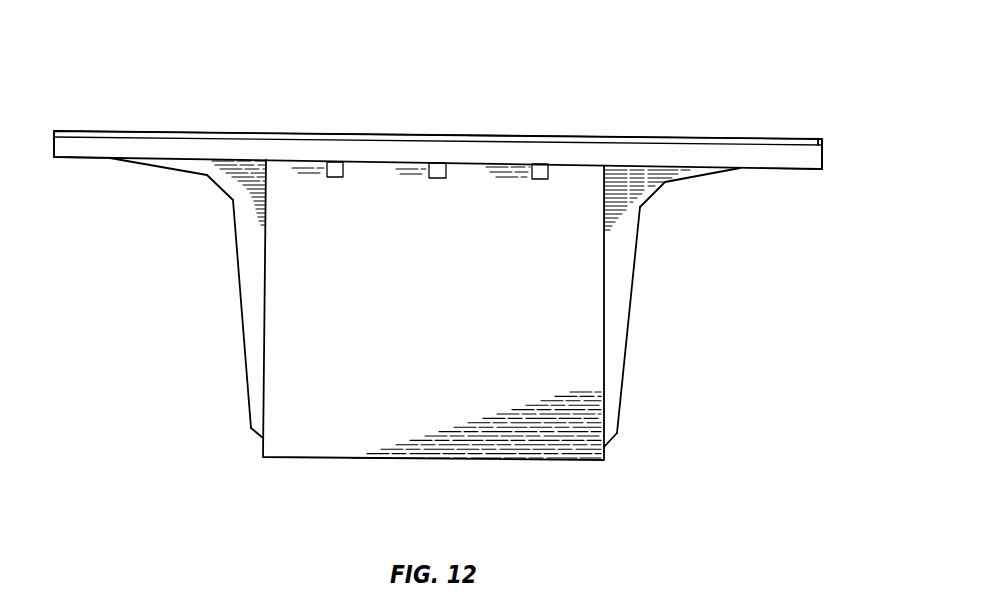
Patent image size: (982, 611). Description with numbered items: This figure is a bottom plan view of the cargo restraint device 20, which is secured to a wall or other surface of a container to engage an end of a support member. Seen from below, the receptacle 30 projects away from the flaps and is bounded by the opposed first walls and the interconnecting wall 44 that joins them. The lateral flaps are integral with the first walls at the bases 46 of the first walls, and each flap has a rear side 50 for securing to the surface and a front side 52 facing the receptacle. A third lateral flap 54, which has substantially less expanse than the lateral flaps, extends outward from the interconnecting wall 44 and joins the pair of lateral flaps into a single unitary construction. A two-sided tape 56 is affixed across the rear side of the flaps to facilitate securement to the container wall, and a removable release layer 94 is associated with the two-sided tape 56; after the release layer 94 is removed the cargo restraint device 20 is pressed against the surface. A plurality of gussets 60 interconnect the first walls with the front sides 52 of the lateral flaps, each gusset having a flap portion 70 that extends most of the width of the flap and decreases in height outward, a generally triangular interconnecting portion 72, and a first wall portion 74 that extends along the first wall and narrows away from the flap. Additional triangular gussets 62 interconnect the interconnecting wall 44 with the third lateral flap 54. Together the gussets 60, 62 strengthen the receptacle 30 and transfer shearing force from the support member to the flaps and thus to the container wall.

The cargo restraint device 20 is at (733, 56).
The receptacle 30 is at (425, 309).
The interconnecting wall 44 is at (446, 351).
The bases of the first walls 46 is at (693, 152).
The rear side 50 is at (102, 131).
The front side 52 is at (97, 158).
The third lateral flap 54 is at (524, 141).
The two-sided tape 56 is at (615, 134).
The gussets 60 is at (253, 232).
The gussets 62 is at (437, 163).
The flap portion 70 is at (207, 176).
The interconnecting portion 72 is at (231, 198).
The first wall portion 74 is at (247, 345).
The release layer 94 is at (249, 132).